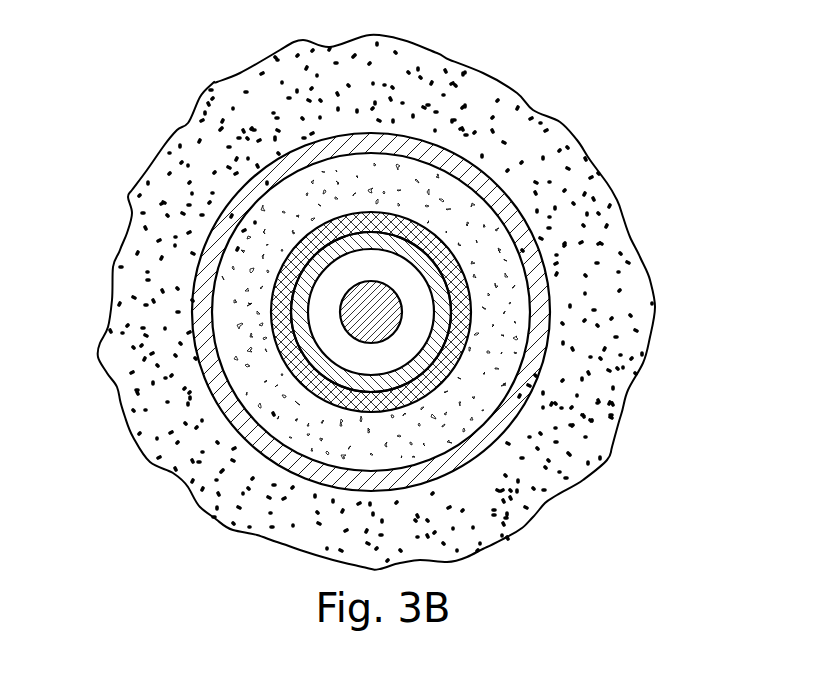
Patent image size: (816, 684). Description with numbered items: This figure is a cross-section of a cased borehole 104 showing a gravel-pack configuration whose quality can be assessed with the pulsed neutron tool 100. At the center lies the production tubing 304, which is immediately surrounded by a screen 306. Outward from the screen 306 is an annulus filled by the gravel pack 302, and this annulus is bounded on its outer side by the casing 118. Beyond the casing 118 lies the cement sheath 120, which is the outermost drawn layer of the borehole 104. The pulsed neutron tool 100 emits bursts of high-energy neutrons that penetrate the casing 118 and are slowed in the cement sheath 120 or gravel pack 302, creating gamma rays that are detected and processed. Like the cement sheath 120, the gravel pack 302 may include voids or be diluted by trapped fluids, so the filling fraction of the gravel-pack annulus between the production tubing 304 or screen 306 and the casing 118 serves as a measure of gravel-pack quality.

The cased borehole 104 is at (150, 106).
The cement sheath 120 is at (478, 85).
The casing 118 is at (195, 281).
The gravel pack 302 is at (462, 203).
The screen 306 is at (438, 377).
The production tubing 304 is at (387, 385).
The pulsed neutron tool 100 is at (390, 315).